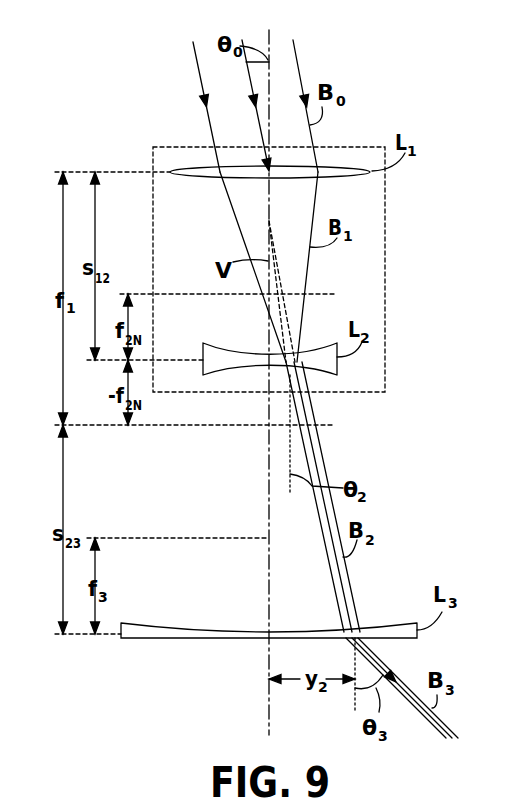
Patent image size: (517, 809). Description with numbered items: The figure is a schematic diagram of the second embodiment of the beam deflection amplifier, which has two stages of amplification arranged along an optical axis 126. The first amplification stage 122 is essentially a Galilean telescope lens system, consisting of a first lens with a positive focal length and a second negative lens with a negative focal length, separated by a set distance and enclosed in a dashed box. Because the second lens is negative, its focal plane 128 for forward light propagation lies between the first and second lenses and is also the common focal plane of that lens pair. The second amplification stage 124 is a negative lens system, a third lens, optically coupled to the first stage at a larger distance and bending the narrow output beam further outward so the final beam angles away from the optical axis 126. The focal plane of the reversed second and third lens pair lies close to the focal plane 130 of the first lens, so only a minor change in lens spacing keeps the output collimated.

The first amplification stage 122 is at (385, 288).
The second amplification stage 124 is at (202, 628).
The optical axis 126 is at (268, 583).
The focal plane of lens L2N 128 is at (318, 294).
The focal plane of lens L1 130 is at (237, 428).